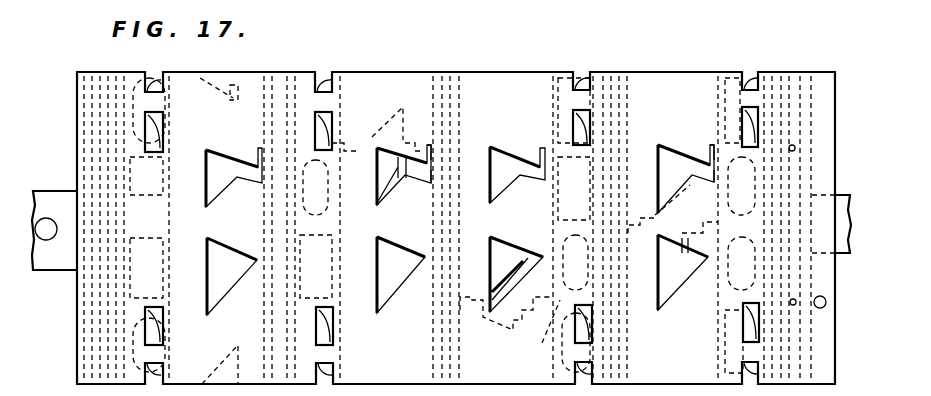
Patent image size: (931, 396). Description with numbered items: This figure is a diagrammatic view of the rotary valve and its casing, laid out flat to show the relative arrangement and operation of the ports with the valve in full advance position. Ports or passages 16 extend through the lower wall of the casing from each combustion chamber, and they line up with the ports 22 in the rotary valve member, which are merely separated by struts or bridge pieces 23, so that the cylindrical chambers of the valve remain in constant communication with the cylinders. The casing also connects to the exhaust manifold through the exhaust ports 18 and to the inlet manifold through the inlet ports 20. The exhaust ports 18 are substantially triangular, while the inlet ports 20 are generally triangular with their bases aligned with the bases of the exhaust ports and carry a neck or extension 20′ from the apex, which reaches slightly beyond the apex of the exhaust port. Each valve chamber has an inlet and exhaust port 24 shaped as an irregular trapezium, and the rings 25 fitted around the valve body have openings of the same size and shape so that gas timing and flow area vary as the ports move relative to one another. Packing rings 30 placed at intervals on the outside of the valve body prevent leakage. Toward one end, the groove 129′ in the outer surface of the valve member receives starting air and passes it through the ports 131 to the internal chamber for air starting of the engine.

The ports or passages 16 is at (333, 80).
The exhaust ports 18 is at (207, 297).
The inlet ports 20 is at (206, 160).
The neck or extension 20′ is at (432, 170).
The ports 22 is at (332, 122).
The struts or bridge pieces 23 is at (330, 227).
The inlet and exhaust port 24 is at (392, 168).
The rings 25 is at (477, 82).
The packing rings 30 is at (275, 75).
The groove 129′ is at (792, 70).
The ports 131 is at (792, 300).